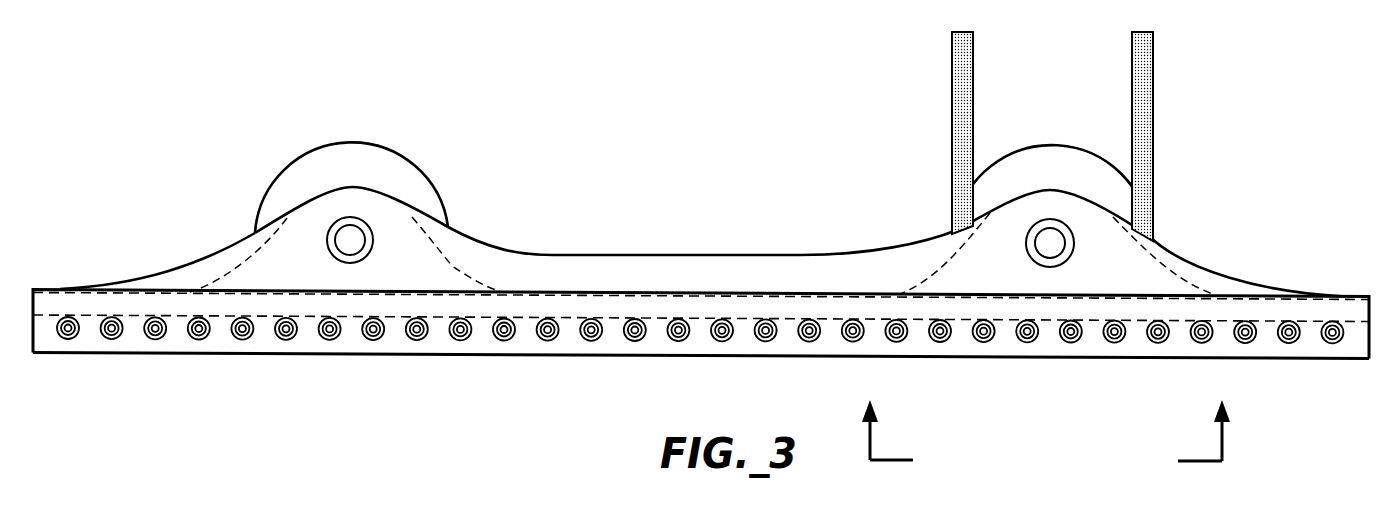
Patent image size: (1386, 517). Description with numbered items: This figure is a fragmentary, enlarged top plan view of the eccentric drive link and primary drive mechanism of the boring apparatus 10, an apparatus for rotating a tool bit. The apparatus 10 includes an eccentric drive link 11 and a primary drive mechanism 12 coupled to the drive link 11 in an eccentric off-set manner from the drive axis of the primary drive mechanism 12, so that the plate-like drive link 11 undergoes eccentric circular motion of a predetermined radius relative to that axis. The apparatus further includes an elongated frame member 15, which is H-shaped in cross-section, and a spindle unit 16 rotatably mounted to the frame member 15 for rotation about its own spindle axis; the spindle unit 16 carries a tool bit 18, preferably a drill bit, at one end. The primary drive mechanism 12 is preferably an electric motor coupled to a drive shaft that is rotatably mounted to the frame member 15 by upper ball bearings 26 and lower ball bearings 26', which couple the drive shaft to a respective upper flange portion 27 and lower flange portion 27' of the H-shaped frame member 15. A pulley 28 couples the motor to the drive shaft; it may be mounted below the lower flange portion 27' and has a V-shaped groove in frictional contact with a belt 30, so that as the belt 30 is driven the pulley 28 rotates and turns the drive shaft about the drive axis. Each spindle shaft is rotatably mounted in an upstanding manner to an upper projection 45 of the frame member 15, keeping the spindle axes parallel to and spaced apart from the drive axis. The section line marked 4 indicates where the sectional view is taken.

The apparatus 10 is at (597, 75).
The eccentric drive link 11 is at (453, 265).
The primary drive mechanism 12 is at (1048, 136).
The frame member 15 is at (1353, 295).
The spindle unit 16 is at (592, 318).
The tool bit 18 is at (547, 333).
The upper ball bearings 26 is at (1024, 197).
The lower ball bearings 26' is at (319, 175).
The upper flange portion 27 is at (1053, 158).
The lower flange portion 27' is at (359, 160).
The pulley 28 is at (1055, 147).
The belt 30 is at (1155, 145).
The upper projection 45 is at (160, 355).
The section line 4- 4 is at (1046, 416).